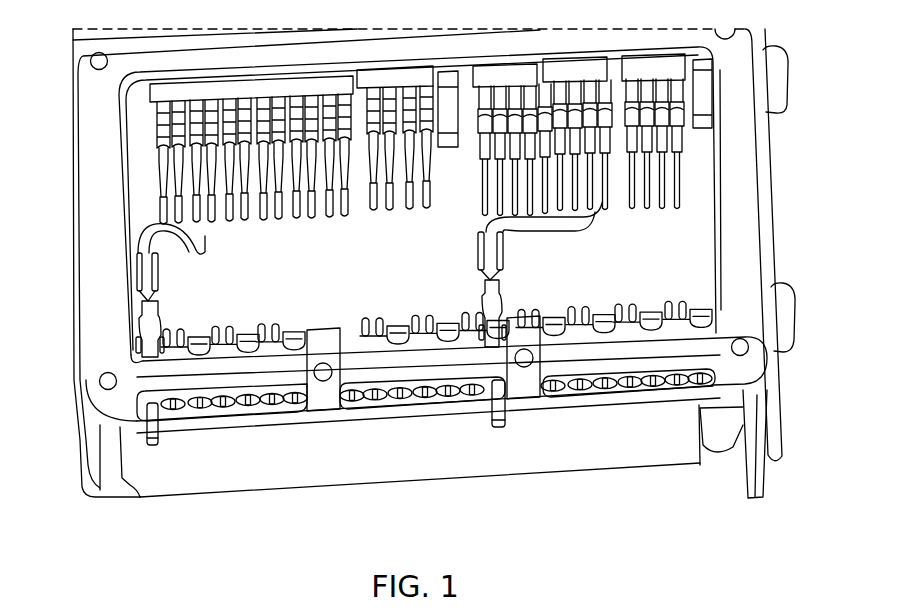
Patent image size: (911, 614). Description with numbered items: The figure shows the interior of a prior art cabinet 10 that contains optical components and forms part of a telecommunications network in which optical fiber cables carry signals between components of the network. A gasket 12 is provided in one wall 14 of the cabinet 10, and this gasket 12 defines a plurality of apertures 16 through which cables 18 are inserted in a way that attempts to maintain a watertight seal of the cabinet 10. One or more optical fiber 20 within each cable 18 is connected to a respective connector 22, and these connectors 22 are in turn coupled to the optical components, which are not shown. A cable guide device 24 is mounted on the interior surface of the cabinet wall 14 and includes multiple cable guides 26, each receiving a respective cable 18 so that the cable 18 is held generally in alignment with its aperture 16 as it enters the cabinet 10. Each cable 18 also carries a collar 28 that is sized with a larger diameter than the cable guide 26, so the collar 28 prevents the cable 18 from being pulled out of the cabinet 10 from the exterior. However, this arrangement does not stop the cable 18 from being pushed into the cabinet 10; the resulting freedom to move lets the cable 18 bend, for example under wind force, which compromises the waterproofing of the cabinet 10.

The cabinet 10 is at (757, 156).
The gasket 12 is at (700, 350).
The wall 14 is at (724, 388).
The apertures 16 is at (200, 413).
The cables 18 is at (152, 433).
The optical fiber 20 is at (152, 285).
The connectors 22 is at (217, 226).
The cable guide device 24 is at (716, 316).
The cable guides 26 is at (372, 318).
The collar 28 is at (147, 323).